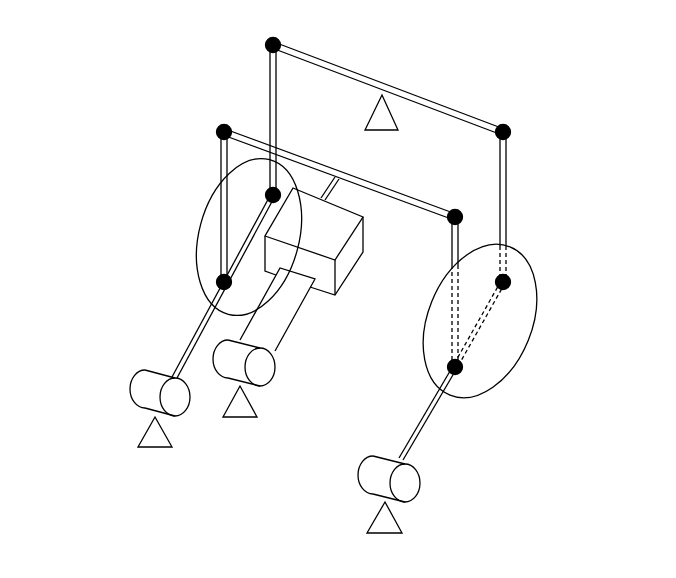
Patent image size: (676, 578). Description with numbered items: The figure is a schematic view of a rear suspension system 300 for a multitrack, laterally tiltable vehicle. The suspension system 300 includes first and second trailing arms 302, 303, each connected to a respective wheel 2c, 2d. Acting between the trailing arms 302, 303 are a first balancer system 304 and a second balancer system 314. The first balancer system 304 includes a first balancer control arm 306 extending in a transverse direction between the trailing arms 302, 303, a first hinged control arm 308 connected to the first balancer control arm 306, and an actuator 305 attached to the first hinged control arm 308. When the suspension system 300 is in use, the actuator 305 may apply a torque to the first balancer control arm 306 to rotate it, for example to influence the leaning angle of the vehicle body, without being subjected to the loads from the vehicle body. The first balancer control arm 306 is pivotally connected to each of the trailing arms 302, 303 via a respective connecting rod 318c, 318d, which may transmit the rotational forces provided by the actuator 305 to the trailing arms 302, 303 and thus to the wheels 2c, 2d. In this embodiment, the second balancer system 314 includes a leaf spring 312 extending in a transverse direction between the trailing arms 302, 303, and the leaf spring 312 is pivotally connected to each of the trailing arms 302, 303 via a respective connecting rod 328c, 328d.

The suspension system 300 is at (128, 100).
The second balancer system 314 is at (398, 58).
The leaf spring 312 is at (434, 99).
The first balancer control arm 306 is at (381, 184).
The connecting rod 328c is at (270, 90).
The connecting rod 318c is at (221, 163).
The connecting rod 328d is at (507, 156).
The connecting rod 318d is at (451, 239).
The wheel 2c is at (199, 223).
The wheel 2d is at (539, 273).
The first trailing arm 302 is at (187, 336).
The second trailing arm 303 is at (429, 424).
The first balancer system 304 is at (338, 345).
The actuator 305 is at (347, 276).
The first hinged control arm 308 is at (285, 328).